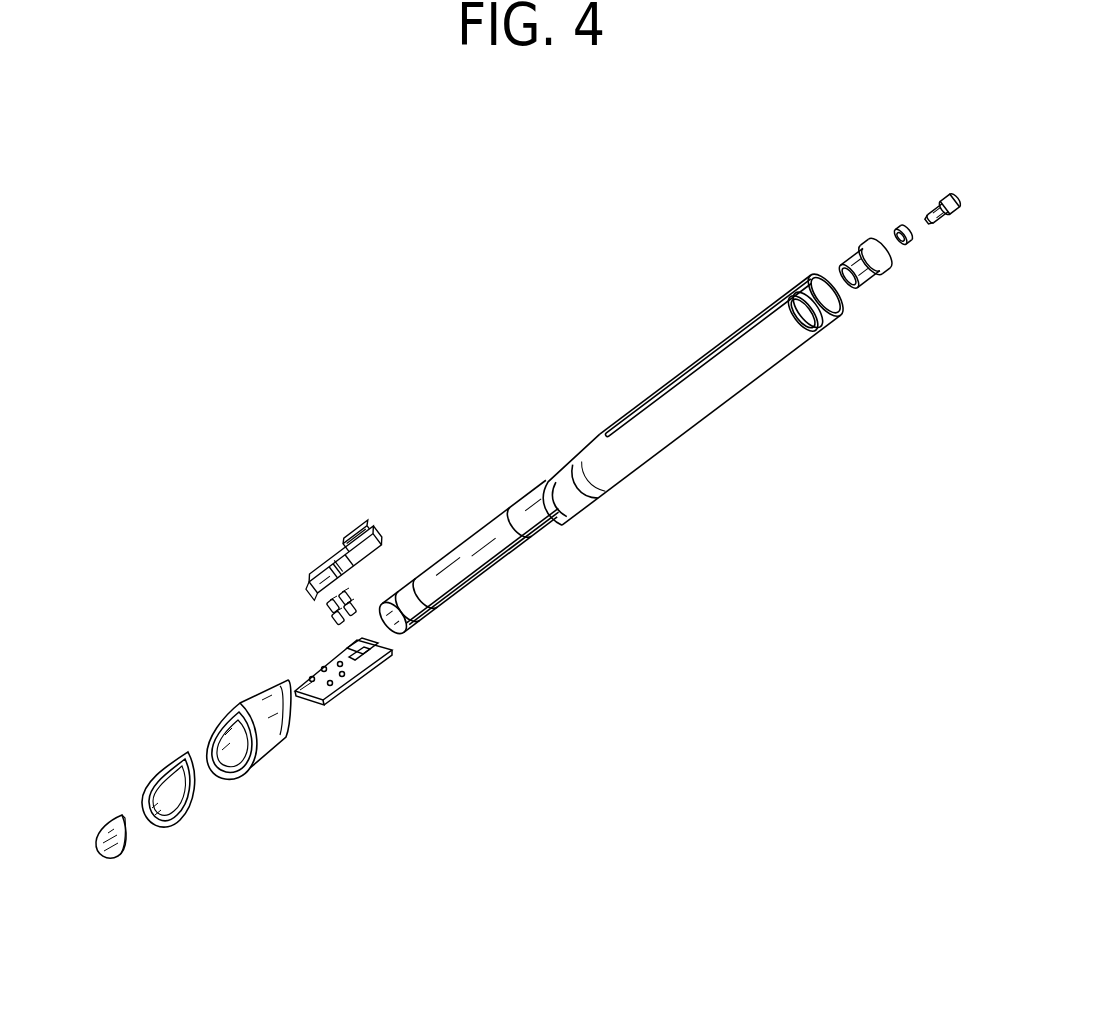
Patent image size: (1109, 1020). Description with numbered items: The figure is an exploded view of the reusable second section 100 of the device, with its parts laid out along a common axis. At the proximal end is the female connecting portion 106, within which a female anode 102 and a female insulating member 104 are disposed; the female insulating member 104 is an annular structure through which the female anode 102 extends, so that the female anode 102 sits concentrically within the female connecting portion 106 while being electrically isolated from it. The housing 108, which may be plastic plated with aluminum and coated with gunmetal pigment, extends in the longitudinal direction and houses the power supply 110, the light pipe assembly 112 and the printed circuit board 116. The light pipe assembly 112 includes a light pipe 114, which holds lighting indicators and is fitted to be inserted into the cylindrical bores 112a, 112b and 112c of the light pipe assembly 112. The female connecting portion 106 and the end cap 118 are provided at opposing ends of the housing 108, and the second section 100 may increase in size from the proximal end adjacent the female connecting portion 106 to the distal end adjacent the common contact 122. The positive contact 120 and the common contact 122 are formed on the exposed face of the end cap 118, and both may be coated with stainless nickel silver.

The second section 100 is at (527, 277).
The female anode 102 is at (946, 222).
The female insulating member 104 is at (895, 229).
The female connecting portion 106 is at (869, 281).
The housing 108 is at (682, 438).
The power supply 110 is at (488, 572).
The light pipe assembly 112 is at (352, 543).
The cylindrical bore 112a is at (318, 580).
The cylindrical bore 112b is at (330, 571).
The cylindrical bore 112c is at (337, 562).
The light pipe 114 is at (330, 612).
The printed circuit board 116 is at (365, 672).
The end cap 118 is at (236, 704).
The positive contact 120 is at (184, 818).
The common contact 122 is at (106, 822).